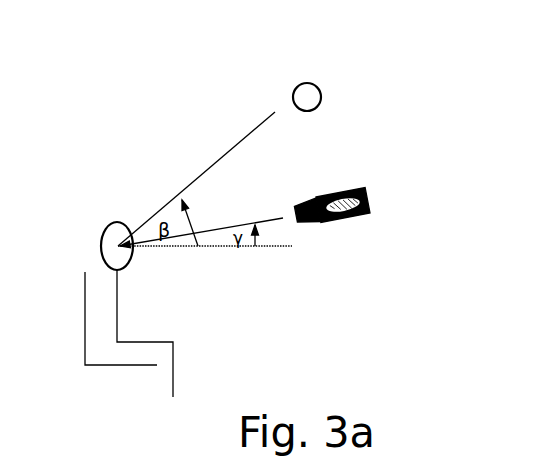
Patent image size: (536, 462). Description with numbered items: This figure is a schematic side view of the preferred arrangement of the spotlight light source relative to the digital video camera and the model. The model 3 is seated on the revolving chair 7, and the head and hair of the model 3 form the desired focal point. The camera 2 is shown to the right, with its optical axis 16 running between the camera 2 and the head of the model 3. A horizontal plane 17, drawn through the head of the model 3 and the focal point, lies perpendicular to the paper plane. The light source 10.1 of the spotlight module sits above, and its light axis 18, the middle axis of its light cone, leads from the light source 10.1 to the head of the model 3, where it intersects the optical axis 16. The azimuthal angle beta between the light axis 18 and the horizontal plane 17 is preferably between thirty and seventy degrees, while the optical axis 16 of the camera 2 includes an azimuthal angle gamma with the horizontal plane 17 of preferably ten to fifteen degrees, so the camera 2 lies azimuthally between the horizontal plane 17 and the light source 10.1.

The camera 2 is at (352, 218).
The model 3 is at (93, 230).
The revolving chair 7 is at (88, 370).
The light source 10.1 is at (307, 97).
The optical axis 16 is at (263, 220).
The horizontal plane 17 is at (217, 248).
The light axis 18 is at (243, 138).